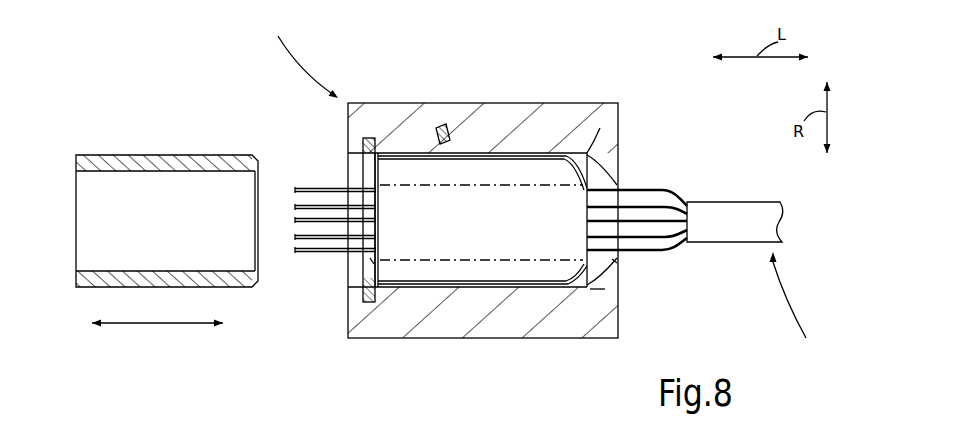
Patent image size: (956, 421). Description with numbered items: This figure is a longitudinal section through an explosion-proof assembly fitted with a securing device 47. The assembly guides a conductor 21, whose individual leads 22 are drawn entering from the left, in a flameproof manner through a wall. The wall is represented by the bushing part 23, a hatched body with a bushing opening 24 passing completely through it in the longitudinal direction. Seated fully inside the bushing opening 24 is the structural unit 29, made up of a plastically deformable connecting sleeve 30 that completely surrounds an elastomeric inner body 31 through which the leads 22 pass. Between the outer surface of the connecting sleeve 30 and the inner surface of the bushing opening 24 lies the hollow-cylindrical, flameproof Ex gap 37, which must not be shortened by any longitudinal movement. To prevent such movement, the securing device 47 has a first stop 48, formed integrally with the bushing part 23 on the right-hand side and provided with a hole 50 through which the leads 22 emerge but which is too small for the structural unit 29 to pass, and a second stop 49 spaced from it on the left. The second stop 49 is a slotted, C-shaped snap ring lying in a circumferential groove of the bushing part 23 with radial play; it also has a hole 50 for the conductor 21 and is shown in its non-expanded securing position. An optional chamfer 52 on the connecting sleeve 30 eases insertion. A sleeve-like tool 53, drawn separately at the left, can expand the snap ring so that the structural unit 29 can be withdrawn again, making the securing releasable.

The conductor 21 is at (755, 282).
The lead 22 is at (327, 187).
The bushing part 23 is at (488, 122).
The bushing opening 24 is at (620, 180).
The structural unit 29 is at (442, 128).
The connecting sleeve 30 is at (413, 268).
The inner body 31 is at (443, 258).
The Ex gap 37 is at (605, 289).
The securing device 47 is at (300, 55).
The first stop 48 is at (612, 158).
The second stop 49 is at (365, 268).
The hole 50 is at (372, 262).
The chamfer 52 is at (604, 128).
The tool 53 is at (172, 155).